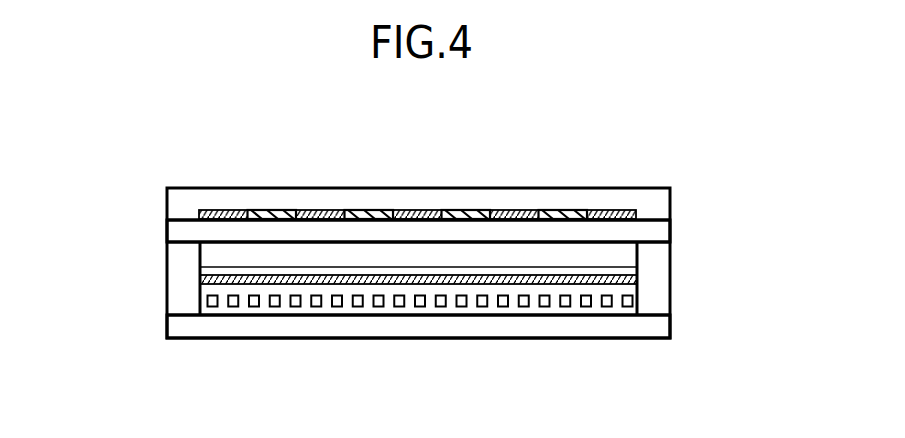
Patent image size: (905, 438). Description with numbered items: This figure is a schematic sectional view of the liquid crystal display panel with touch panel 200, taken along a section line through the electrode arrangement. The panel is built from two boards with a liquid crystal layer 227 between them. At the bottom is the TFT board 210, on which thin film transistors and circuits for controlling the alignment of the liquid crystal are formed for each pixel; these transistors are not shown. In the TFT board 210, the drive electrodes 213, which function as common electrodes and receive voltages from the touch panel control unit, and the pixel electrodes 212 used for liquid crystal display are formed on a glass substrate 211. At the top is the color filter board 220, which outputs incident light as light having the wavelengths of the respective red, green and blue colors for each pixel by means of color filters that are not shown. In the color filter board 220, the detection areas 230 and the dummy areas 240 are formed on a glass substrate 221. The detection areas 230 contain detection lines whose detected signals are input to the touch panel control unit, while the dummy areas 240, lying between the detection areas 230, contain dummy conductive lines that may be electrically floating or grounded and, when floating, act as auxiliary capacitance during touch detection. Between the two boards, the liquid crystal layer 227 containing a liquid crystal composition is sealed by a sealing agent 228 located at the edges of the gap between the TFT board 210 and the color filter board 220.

The liquid crystal display panel with touch panel 200 is at (530, 143).
The color filter board 220 is at (762, 148).
The dummy areas 240 is at (567, 212).
The detection areas 230 is at (622, 212).
The glass substrate 221 is at (662, 230).
The liquid crystal layer 227 is at (215, 257).
The sealing agent 228 is at (175, 298).
The TFT board 210 is at (762, 268).
The drive electrodes 213 is at (627, 280).
The pixel electrodes 212 is at (627, 300).
The glass substrate 211 is at (660, 328).